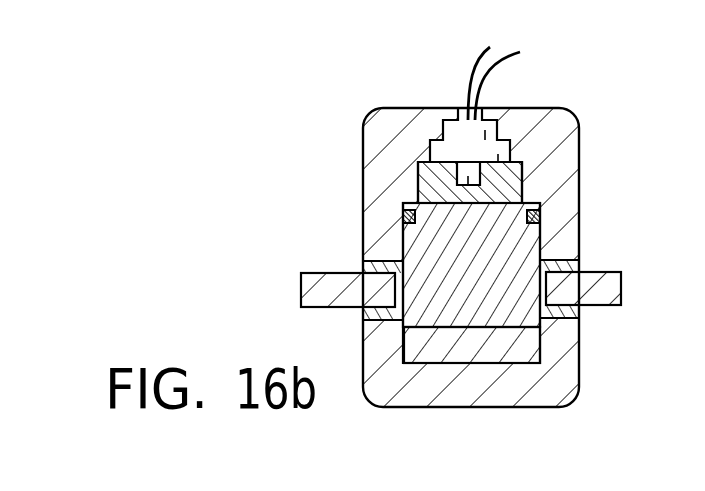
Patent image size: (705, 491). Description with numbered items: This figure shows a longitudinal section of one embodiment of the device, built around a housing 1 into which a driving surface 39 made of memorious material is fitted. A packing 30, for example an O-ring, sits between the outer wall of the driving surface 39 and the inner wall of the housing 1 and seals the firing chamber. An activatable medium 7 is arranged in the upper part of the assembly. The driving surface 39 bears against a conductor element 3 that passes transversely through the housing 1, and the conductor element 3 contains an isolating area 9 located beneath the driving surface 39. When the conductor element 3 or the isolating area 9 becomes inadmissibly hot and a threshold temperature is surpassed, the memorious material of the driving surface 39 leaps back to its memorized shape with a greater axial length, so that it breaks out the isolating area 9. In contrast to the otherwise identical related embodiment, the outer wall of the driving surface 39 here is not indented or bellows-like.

The housing 1 is at (557, 127).
The medium 7 is at (517, 175).
The packing 30 is at (540, 212).
The driving surface 39 is at (504, 257).
The conductor element 3 is at (617, 284).
The isolating area 9 is at (527, 345).